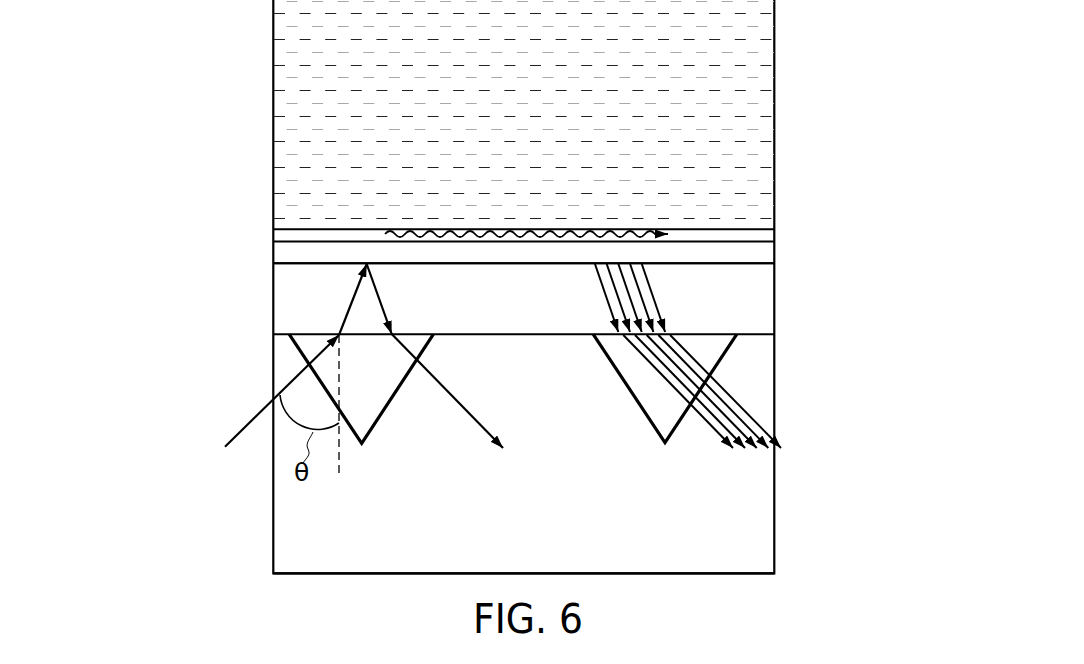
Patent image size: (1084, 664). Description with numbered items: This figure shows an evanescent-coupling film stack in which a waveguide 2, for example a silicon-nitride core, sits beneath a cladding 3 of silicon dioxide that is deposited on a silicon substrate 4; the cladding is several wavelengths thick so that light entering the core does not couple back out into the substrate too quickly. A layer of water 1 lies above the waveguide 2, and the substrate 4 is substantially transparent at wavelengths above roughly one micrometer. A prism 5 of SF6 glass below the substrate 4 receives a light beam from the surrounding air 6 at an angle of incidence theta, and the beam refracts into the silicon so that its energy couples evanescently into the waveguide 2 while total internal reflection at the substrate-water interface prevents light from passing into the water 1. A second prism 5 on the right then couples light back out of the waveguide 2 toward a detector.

The water 1 is at (325, 72).
The waveguide (200 nm Si3N4) 2 is at (422, 232).
The cladding (3 um SiO2) 3 is at (725, 253).
The Si substrate 4 is at (523, 287).
The prism 5 is at (393, 406).
The air 6 is at (523, 527).